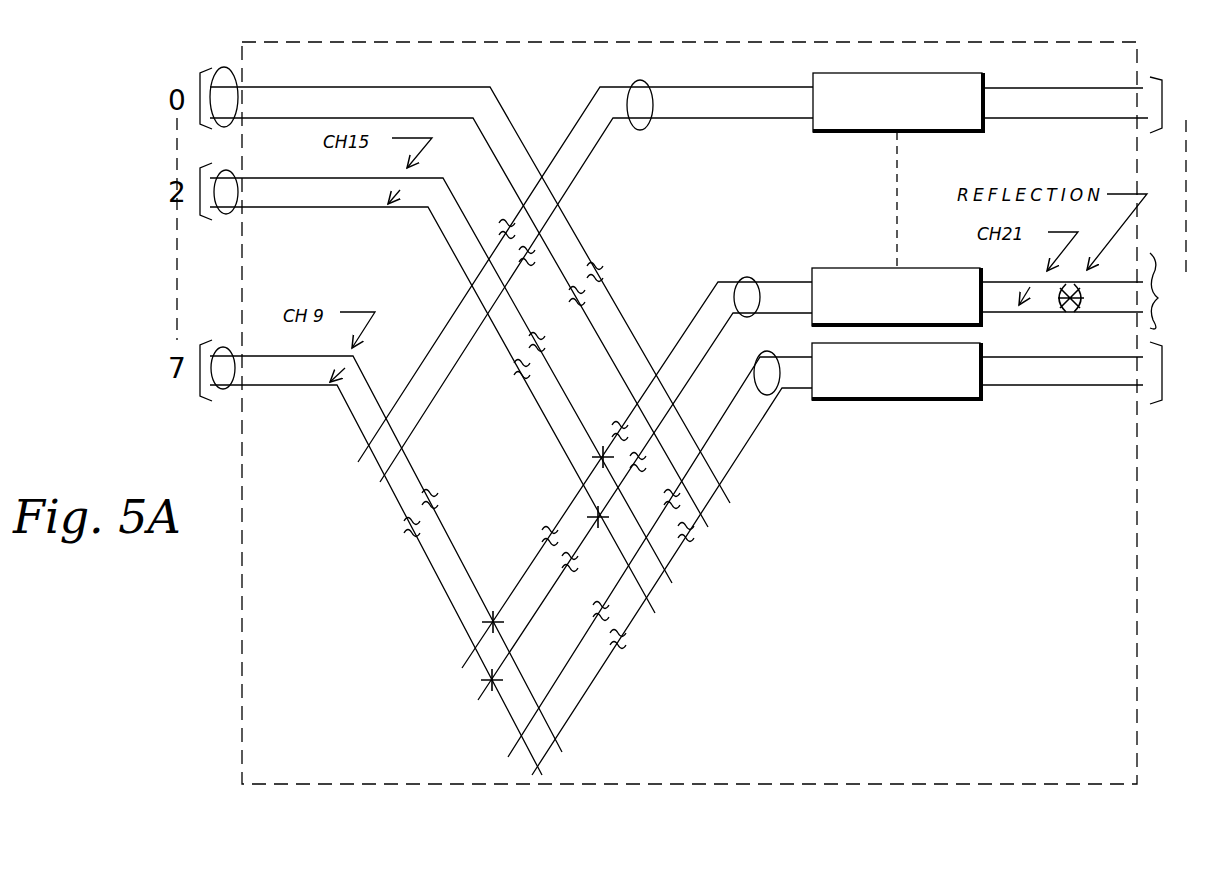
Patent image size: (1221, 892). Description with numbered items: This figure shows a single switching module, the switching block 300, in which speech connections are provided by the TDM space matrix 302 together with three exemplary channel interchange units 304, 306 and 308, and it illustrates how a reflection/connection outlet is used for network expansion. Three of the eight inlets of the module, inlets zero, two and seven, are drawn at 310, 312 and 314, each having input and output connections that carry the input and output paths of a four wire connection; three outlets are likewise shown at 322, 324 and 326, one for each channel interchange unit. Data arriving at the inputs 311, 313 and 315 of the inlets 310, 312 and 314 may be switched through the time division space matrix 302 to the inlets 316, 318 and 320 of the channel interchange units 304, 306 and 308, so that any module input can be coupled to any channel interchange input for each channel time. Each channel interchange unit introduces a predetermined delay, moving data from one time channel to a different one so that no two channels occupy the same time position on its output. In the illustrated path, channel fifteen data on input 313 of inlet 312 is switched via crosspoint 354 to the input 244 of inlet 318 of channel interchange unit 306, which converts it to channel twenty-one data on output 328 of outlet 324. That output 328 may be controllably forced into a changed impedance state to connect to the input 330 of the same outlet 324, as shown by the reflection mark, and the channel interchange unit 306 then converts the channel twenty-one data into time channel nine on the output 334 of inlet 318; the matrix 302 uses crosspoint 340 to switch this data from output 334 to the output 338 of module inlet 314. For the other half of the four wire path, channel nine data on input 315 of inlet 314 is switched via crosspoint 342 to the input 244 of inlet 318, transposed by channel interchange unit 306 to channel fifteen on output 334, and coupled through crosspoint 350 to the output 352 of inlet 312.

The switching block 300 is at (1138, 466).
The TDM space matrix 302 is at (514, 471).
The channel interchange unit 304 is at (872, 136).
The channel interchange unit 306 is at (850, 268).
The channel interchange unit 308 is at (915, 402).
The inlet 310 is at (217, 72).
The input 311 is at (275, 87).
The inlet 312 is at (228, 214).
The input 313 is at (283, 178).
The inlet 314 is at (224, 392).
The input 315 is at (269, 357).
The inlet of channel interchange unit 316 is at (641, 82).
The inlet of channel interchange unit 318 is at (752, 316).
The inlet of channel interchange unit 320 is at (775, 398).
The outlet 322 is at (1146, 103).
The outlet 324 is at (1169, 278).
The outlet 326 is at (1150, 406).
The output 328 is at (1000, 282).
The input 330 is at (1000, 313).
The output 334 is at (784, 314).
The output 338 is at (268, 387).
The crosspoint 340 is at (487, 680).
The crosspoint 342 is at (493, 617).
The crosspoint 350 is at (594, 517).
The output 352 is at (282, 208).
The crosspoint 354 is at (603, 452).
The input of channel interchange inlet 244 is at (786, 282).